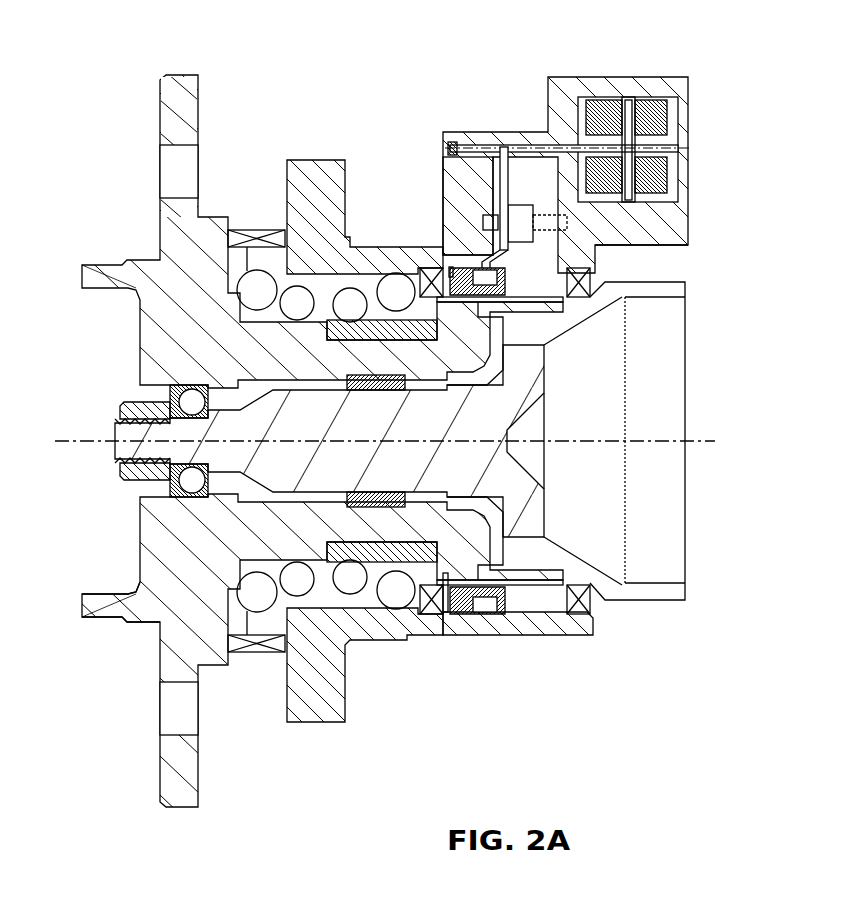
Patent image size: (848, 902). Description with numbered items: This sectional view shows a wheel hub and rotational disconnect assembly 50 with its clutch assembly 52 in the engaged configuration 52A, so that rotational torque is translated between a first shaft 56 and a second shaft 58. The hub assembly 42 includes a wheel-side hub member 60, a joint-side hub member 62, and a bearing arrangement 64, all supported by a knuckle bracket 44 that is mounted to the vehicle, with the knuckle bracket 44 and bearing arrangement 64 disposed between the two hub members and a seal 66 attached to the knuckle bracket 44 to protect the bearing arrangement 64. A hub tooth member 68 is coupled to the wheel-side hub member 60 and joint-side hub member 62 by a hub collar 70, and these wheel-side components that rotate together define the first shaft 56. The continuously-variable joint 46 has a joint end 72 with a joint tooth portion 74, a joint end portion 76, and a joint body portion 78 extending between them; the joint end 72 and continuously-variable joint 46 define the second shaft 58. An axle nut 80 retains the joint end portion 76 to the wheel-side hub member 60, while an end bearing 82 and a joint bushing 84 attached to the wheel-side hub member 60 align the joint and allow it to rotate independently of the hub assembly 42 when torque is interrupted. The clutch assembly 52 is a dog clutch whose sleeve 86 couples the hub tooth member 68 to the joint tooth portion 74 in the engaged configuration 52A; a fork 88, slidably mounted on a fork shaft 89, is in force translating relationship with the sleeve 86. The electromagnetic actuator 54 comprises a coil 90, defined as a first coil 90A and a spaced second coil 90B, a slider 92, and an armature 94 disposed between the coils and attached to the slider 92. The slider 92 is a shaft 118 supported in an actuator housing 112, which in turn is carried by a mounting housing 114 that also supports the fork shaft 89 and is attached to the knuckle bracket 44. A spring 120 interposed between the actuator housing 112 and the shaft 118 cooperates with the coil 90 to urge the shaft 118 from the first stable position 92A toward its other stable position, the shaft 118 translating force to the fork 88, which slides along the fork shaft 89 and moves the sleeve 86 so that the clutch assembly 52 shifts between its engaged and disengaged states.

The hub assembly 42 is at (312, 441).
The knuckle bracket 44 is at (425, 443).
The continuously-variable joint 46 is at (628, 479).
The disconnect assembly 50 is at (466, 437).
The clutch assembly 52 is at (524, 162).
The engaged configuration 52A is at (522, 252).
The electromagnetic actuator 54 is at (584, 144).
The first shaft 56 is at (111, 636).
The second shaft 58 is at (628, 479).
The wheel-side hub member 60 is at (150, 607).
The joint-side hub member 62 is at (375, 563).
The bearing arrangement 64 is at (292, 655).
The seal 66 is at (255, 232).
The hub tooth member 68 is at (445, 613).
The hub collar 70 is at (415, 356).
The joint end 72 is at (654, 602).
The joint tooth portion 74 is at (513, 307).
The joint end portion 76 is at (152, 445).
The joint body portion 78 is at (152, 497).
The axle nut 80 is at (135, 408).
The end bearing 82 is at (192, 400).
The joint bushing 84 is at (380, 375).
The sleeve 86 is at (482, 614).
The fork 88 is at (478, 255).
The fork shaft 89 is at (598, 236).
The coil 90 is at (614, 104).
The first coil 90A is at (600, 110).
The second coil 90B is at (686, 188).
The slider 92 is at (691, 150).
The first stable position 92A is at (644, 147).
The armature 94 is at (622, 110).
The actuator housing 112 is at (686, 108).
The mounting housing 114 is at (572, 88).
The shaft 118 is at (485, 150).
The spring 120 is at (452, 145).